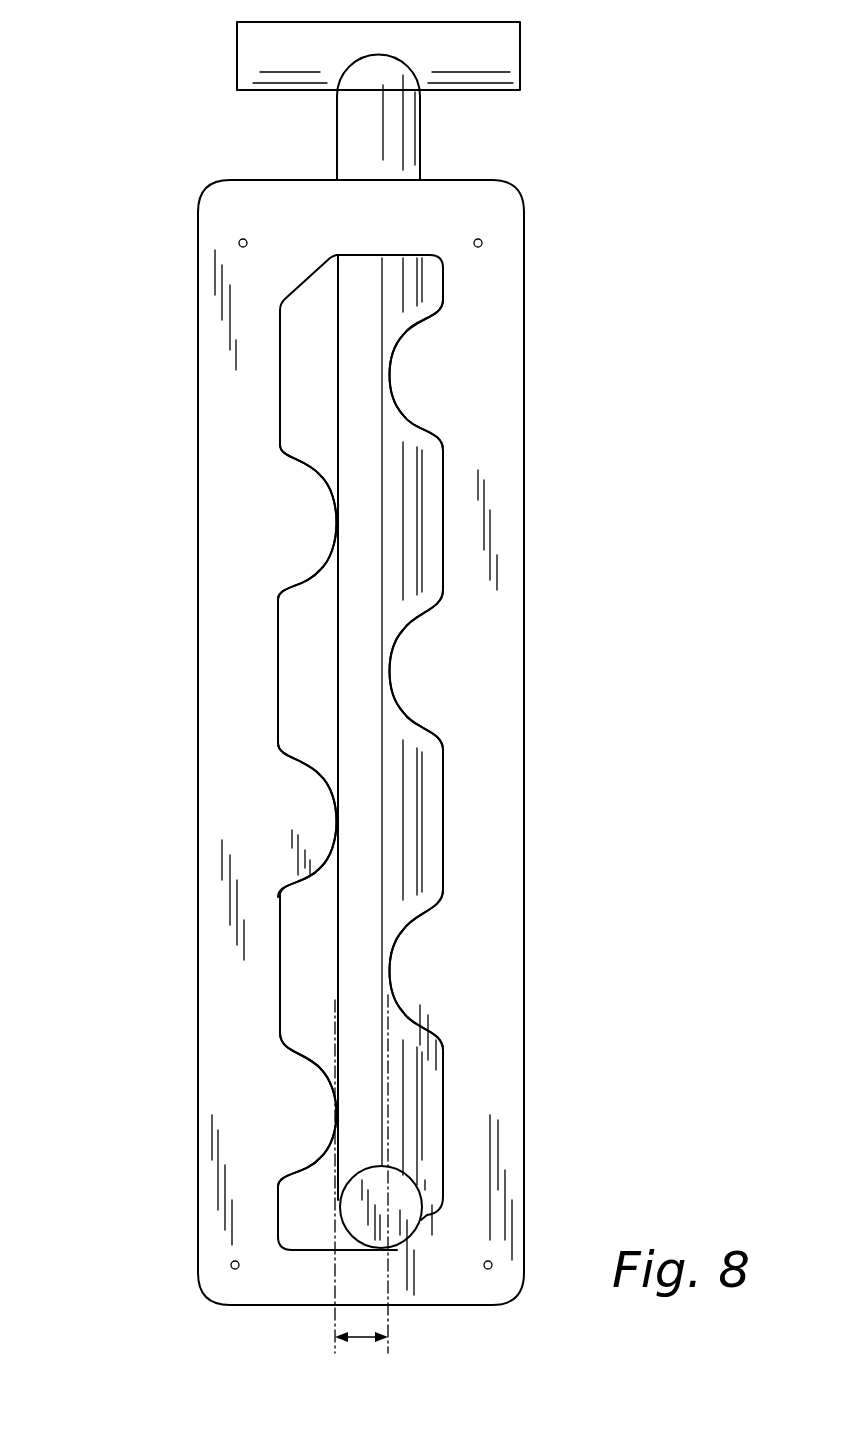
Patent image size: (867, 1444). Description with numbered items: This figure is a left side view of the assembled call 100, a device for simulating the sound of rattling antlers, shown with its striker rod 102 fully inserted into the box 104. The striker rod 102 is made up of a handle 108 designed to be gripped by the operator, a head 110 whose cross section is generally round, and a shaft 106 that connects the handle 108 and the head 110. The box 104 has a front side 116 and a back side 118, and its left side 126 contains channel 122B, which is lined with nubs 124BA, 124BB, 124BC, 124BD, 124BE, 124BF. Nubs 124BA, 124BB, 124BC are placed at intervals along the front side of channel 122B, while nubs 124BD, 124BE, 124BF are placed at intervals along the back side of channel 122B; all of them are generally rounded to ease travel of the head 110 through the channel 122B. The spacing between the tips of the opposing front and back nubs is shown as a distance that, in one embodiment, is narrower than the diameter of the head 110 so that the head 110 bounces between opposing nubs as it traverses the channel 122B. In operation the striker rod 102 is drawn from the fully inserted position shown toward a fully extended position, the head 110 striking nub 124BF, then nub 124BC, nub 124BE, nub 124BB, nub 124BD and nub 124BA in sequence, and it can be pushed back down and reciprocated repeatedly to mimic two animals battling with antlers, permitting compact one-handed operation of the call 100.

The call 100 is at (149, 877).
The striker rod 102 is at (508, 48).
The box 104 is at (495, 287).
The shaft 106 is at (387, 622).
The handle 108 is at (280, 63).
The head 110 is at (410, 1203).
The front side 116 is at (531, 757).
The back side 118 is at (188, 308).
The channel 122B is at (270, 383).
The nub 124BA is at (438, 338).
The nub 124BB is at (467, 698).
The nub 124BC is at (420, 970).
The nub 124BD is at (310, 523).
The nub 124BE is at (310, 818).
The nub 124BF is at (301, 1112).
The left side 126 is at (233, 687).